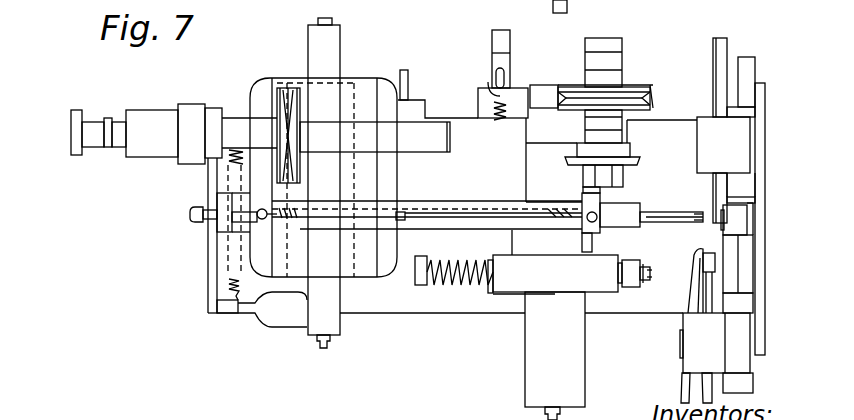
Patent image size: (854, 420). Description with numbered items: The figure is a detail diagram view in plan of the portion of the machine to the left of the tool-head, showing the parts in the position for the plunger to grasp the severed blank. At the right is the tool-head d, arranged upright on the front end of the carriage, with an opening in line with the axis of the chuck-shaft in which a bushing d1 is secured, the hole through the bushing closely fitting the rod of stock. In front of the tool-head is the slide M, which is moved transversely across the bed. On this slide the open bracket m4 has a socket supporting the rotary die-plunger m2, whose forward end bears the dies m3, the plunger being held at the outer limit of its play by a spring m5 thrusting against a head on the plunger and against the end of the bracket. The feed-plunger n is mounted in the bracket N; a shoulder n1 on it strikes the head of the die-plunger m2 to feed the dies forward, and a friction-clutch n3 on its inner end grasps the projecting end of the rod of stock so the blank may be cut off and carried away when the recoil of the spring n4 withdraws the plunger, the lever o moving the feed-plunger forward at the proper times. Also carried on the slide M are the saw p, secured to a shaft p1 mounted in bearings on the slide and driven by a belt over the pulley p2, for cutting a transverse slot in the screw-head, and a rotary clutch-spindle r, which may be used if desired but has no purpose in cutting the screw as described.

The lever o is at (98, 122).
The rotary clutch-spindle r is at (375, 137).
The bracket N is at (323, 177).
The feed-plunger n is at (427, 207).
The shoulder n1 is at (597, 238).
The friction-clutch n3 is at (671, 230).
The spring n4 is at (300, 224).
The slide M is at (611, 143).
The saw p is at (637, 162).
The shaft p1 is at (597, 80).
The pulley p2 is at (632, 90).
The die-plunger m2 is at (476, 262).
The dies m3 is at (647, 282).
The open bracket m4 is at (553, 337).
The spring m5 is at (454, 280).
The tool-head d is at (702, 358).
The bushing d1 is at (747, 223).